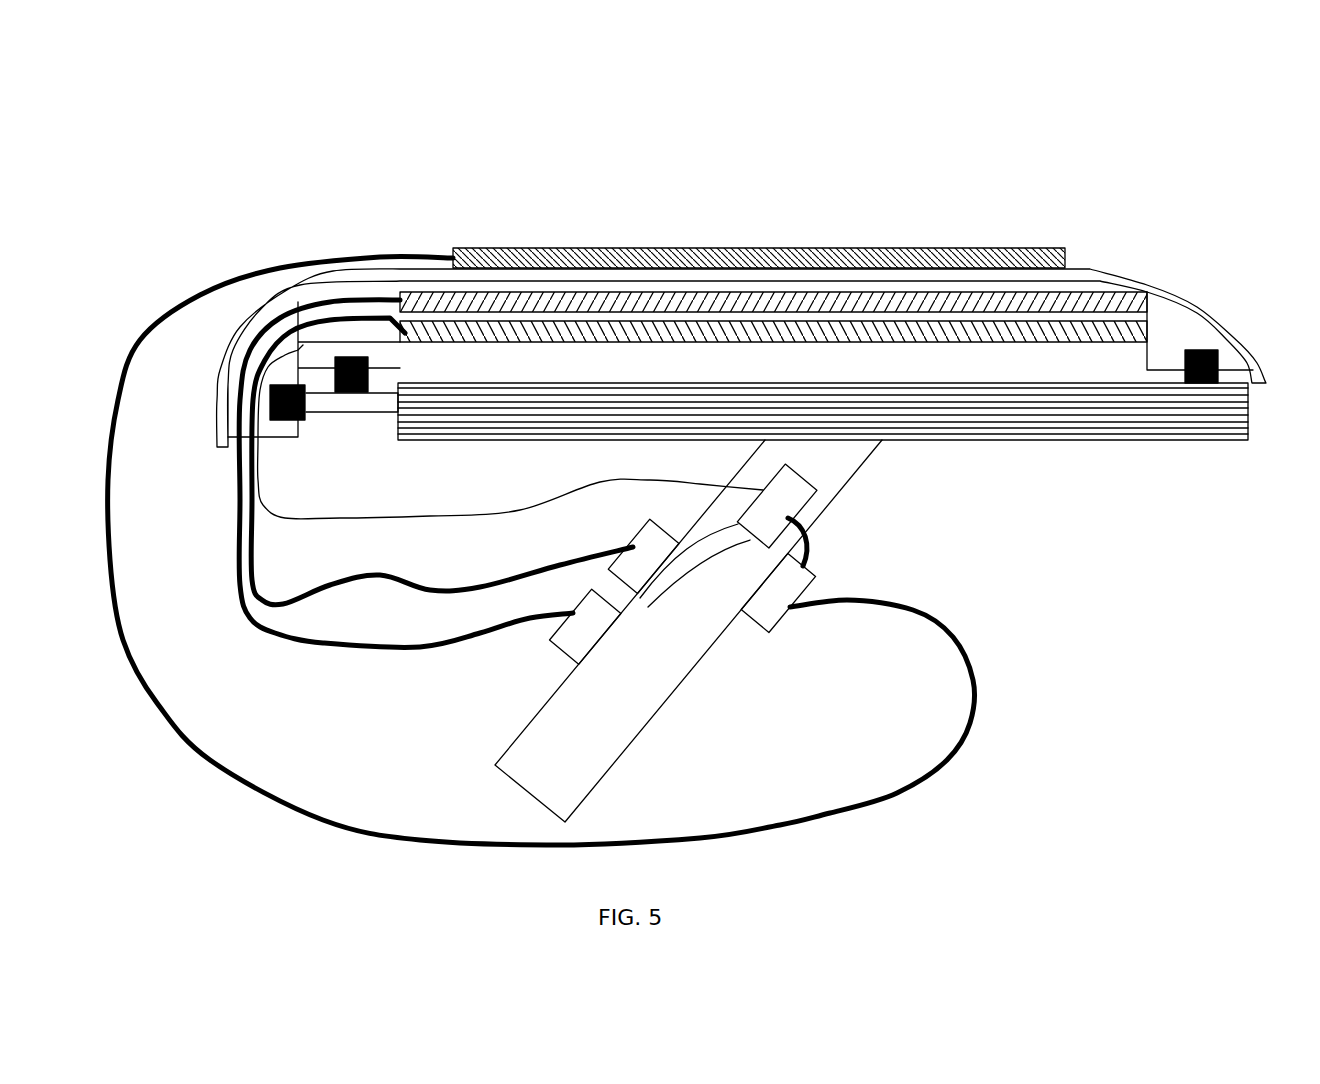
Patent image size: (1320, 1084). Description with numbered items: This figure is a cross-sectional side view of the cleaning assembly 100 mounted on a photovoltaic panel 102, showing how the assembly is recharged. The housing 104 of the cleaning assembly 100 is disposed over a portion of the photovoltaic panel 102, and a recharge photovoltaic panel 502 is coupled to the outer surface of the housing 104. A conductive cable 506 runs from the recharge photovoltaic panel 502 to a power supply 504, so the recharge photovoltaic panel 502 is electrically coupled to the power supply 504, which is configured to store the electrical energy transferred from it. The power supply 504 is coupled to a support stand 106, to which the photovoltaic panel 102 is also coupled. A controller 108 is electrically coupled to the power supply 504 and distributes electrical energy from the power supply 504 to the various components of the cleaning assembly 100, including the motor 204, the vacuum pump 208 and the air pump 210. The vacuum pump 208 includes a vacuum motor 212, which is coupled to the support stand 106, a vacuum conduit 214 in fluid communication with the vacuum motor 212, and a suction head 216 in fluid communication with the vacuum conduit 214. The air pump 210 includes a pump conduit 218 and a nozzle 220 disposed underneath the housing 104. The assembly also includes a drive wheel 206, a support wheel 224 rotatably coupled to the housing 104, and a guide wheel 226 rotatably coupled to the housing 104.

The cleaning assembly 100 is at (858, 127).
The photovoltaic panel 102 is at (1248, 410).
The housing 104 is at (1127, 270).
The support stand 106 is at (688, 631).
The controller 108 is at (803, 478).
The motor 204 is at (388, 350).
The drive wheel 206 is at (352, 357).
The vacuum pump 208 is at (583, 627).
The air pump 210 is at (655, 548).
The vacuum motor 212 is at (568, 641).
The vacuum conduit 214 is at (240, 608).
The suction head 216 is at (928, 292).
The pump conduit 218 is at (353, 577).
The nozzle 220 is at (677, 322).
The support wheel 224 is at (1205, 352).
The guide wheel 226 is at (287, 387).
The recharge photovoltaic panel 502 is at (612, 250).
The power supply 504 is at (797, 590).
The conductive cable 506 is at (298, 813).